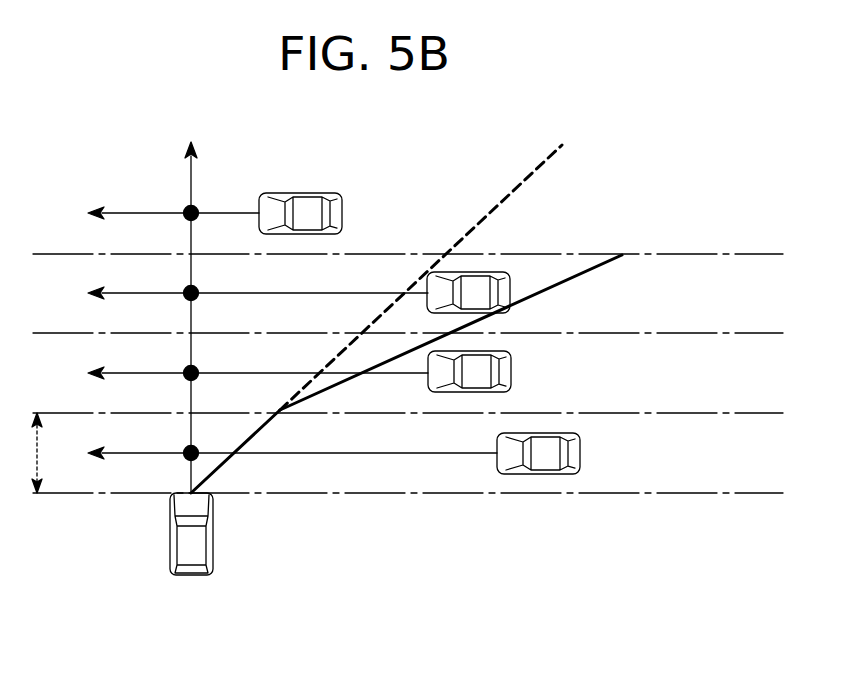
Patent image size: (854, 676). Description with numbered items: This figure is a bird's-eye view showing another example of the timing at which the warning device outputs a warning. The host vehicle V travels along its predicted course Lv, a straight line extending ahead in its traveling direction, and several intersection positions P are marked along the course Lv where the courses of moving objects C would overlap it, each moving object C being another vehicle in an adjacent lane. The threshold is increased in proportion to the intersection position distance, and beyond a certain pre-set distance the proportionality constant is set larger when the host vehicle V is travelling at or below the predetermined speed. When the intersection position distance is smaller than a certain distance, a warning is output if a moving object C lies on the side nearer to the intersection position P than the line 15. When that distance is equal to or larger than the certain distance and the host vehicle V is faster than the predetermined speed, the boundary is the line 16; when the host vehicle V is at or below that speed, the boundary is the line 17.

The course of the host vehicle Lv is at (190, 175).
The intersection position P is at (198, 211).
The moving object C is at (318, 193).
The host vehicle V is at (168, 533).
The line 15 is at (265, 428).
The line 16 is at (512, 192).
The line 17 is at (595, 265).